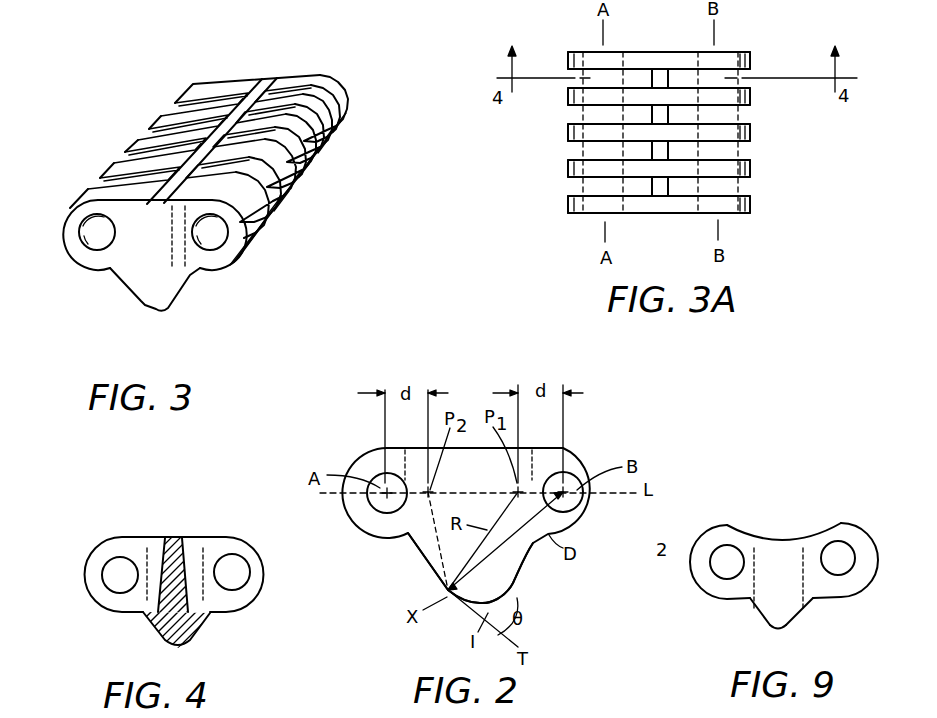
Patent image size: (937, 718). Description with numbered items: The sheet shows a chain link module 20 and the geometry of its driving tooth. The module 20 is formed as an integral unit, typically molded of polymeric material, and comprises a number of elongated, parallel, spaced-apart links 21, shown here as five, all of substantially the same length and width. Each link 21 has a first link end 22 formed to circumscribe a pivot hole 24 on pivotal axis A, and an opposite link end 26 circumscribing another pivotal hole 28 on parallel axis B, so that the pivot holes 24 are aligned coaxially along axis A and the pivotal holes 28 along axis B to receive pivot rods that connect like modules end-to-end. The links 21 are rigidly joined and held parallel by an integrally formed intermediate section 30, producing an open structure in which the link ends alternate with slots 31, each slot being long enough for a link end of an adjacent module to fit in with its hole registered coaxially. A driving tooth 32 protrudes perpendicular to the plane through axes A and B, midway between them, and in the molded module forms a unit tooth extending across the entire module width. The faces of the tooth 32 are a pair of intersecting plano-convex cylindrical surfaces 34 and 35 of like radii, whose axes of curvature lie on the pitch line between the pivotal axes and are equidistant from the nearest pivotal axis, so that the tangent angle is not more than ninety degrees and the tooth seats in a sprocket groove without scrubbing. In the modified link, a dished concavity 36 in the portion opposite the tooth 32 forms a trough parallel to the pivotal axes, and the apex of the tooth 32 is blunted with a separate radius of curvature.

In FIG. 3, the module 20 is at (258, 80).
In FIG. 3A, the module 20 is at (658, 51).
In FIG. 3, the link 21 is at (170, 250).
In FIG. 3, the first link section or end 22 is at (74, 243).
In FIG. 3A, the first link section or end 22 is at (573, 216).
In FIG. 9, the first link section or end 22 is at (703, 548).
In FIG. 3, the pivot hole 24 is at (104, 237).
In FIG. 3A, the pivot hole 24 is at (595, 50).
In FIG. 4, the pivot hole 24 is at (122, 572).
In FIG. 2, the pivot hole 24 is at (372, 478).
In FIG. 9, the pivot hole 24 is at (727, 557).
In FIG. 3, the opposite link section or end 26 is at (237, 246).
In FIG. 3A, the opposite link section or end 26 is at (748, 214).
In FIG. 9, the opposite link section or end 26 is at (867, 553).
In FIG. 3, the pivotal hole 28 is at (210, 250).
In FIG. 3A, the pivotal hole 28 is at (722, 50).
In FIG. 4, the pivotal hole 28 is at (233, 563).
In FIG. 2, the pivotal hole 28 is at (567, 480).
In FIG. 9, the pivotal hole 28 is at (838, 552).
In FIG. 3, the intermediate section 30 is at (250, 100).
In FIG. 3A, the intermediate section 30 is at (672, 70).
In FIG. 4, the intermediate section 30 is at (181, 546).
In FIG. 3, the slots 31 is at (190, 102).
In FIG. 3A, the slots 31 is at (748, 185).
In FIG. 3, the driving tooth 32 is at (160, 290).
In FIG. 4, the driving tooth 32 is at (188, 628).
In FIG. 2, the driving tooth 32 is at (527, 577).
In FIG. 9, the driving tooth 32 is at (783, 607).
In FIG. 2, the cylindrical surface 34 is at (407, 552).
In FIG. 9, the cylindrical surface 34 is at (758, 615).
In FIG. 2, the cylindrical surface 35 is at (537, 557).
In FIG. 9, the cylindrical surface 35 is at (813, 613).
In FIG. 9, the concavity 36 is at (787, 537).